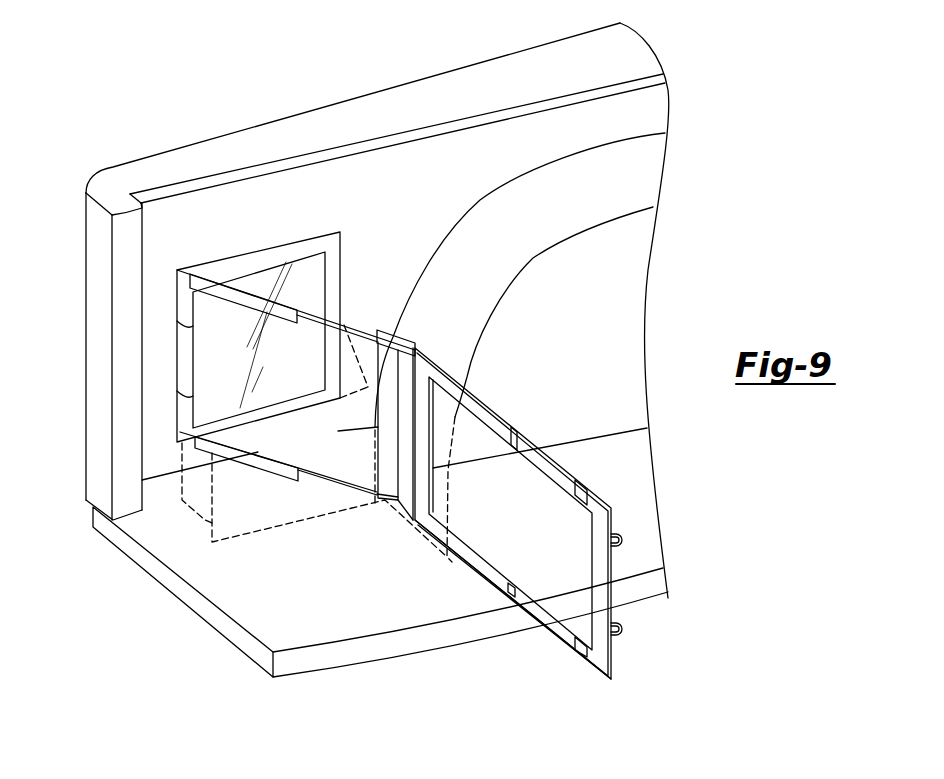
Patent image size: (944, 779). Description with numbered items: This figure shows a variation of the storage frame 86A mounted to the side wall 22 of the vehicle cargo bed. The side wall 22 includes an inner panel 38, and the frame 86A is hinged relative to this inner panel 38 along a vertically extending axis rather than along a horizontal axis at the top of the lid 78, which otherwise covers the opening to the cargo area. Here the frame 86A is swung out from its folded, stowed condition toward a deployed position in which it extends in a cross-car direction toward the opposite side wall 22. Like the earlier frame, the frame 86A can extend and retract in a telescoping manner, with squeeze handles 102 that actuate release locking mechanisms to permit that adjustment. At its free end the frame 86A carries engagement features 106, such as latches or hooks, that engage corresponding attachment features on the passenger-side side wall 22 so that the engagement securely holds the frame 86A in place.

The side wall 22 is at (340, 84).
The inner panel 38 is at (457, 167).
The lid 78 is at (254, 283).
The squeeze handles 102 is at (185, 357).
The frame 86A is at (283, 466).
The engagement features 106 is at (637, 526).